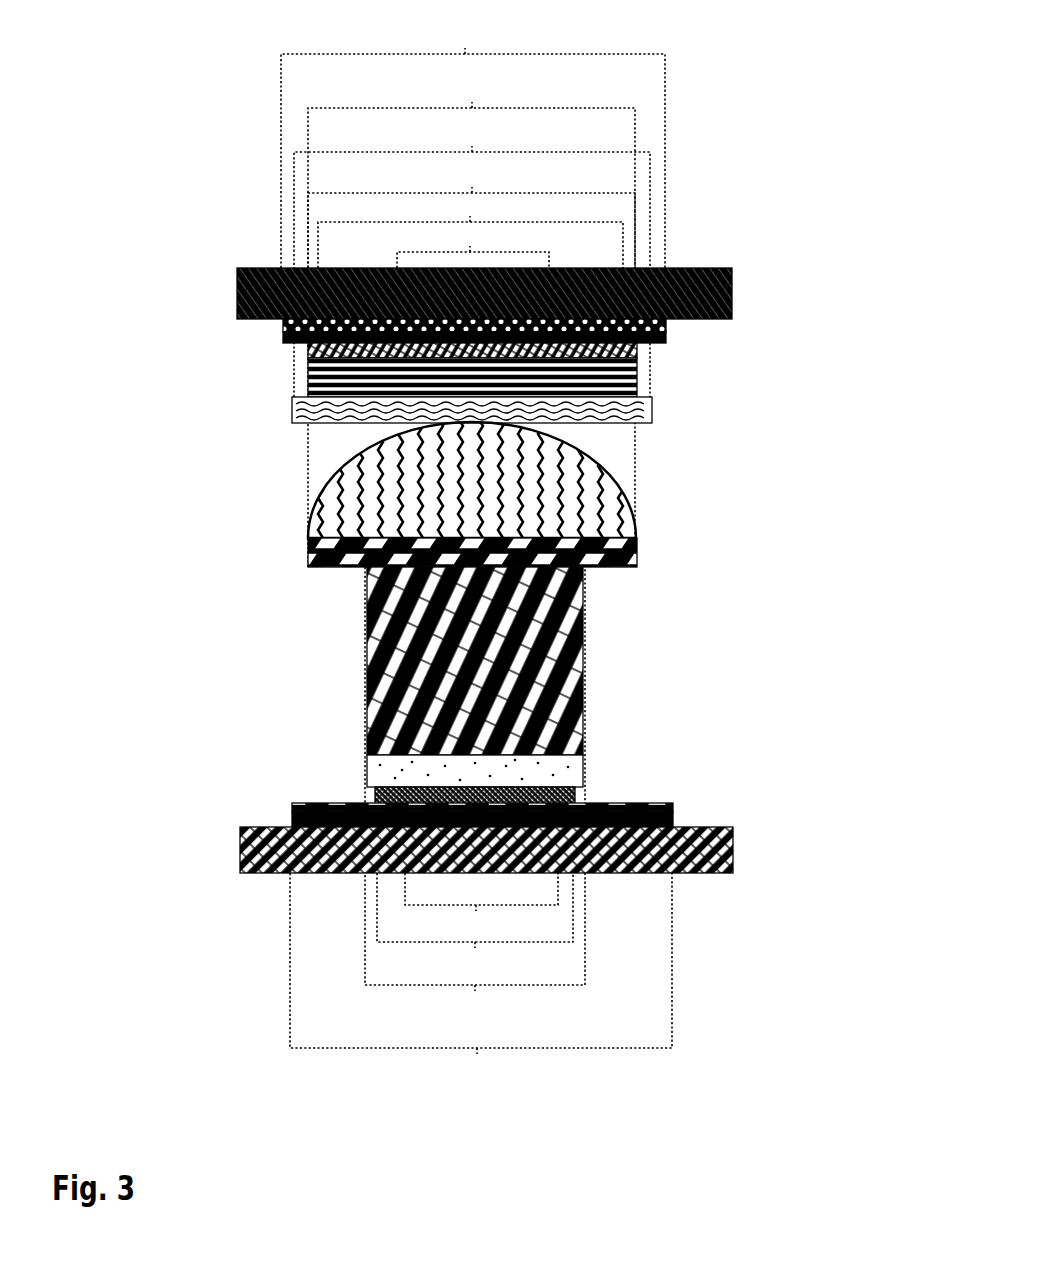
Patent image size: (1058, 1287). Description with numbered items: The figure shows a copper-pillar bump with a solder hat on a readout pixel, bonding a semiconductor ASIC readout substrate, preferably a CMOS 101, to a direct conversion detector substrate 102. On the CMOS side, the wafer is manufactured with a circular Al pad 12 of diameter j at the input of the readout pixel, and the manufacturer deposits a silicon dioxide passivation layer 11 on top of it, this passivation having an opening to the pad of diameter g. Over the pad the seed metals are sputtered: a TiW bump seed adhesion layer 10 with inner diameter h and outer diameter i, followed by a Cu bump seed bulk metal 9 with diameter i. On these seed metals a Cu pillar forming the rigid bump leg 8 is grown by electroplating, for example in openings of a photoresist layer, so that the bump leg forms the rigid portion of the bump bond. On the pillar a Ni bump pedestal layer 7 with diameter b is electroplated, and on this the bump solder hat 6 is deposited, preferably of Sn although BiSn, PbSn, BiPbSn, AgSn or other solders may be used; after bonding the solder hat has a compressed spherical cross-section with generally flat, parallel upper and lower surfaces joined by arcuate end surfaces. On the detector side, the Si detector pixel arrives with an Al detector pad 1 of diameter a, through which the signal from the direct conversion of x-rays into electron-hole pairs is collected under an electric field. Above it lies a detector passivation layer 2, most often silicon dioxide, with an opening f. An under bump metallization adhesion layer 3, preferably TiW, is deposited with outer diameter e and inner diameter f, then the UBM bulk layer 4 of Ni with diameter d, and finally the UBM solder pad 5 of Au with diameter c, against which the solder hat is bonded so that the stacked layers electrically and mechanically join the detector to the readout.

The detector pad 1 is at (695, 325).
The detector passivation layer 2 is at (695, 337).
The UBM adhesion layer 3 is at (660, 350).
The UBM bulk layer 4 is at (671, 382).
The UBM solder pad 5 is at (688, 412).
The bump solder hat 6 is at (651, 503).
The bump pedestal layer 7 is at (666, 555).
The bump leg 8 is at (625, 658).
The bump seed bulk metal 9 is at (613, 772).
The bump seed adhesion layer 10 is at (605, 792).
The ASIC/CMOS passivation layer 11 is at (703, 803).
The ASIC/CMOS pad 12 is at (703, 817).
The CMOS readout substrate 101 is at (728, 881).
The detector substrate 102 is at (732, 268).
The detector pad diameter a is at (473, 141).
The bump pedestal diameter b is at (471, 315).
The UBM solder pad diameter c is at (472, 254).
The UBM bulk diameter d is at (471, 211).
The UBM adhesion outer diameter e is at (470, 229).
The detector passivation opening diameter f is at (473, 245).
The CMOS passivation opening diameter g is at (481, 904).
The bump seed adhesion inner diameter h is at (475, 926).
The bump seed outer diameter i is at (475, 793).
The CMOS pad diameter j is at (481, 977).